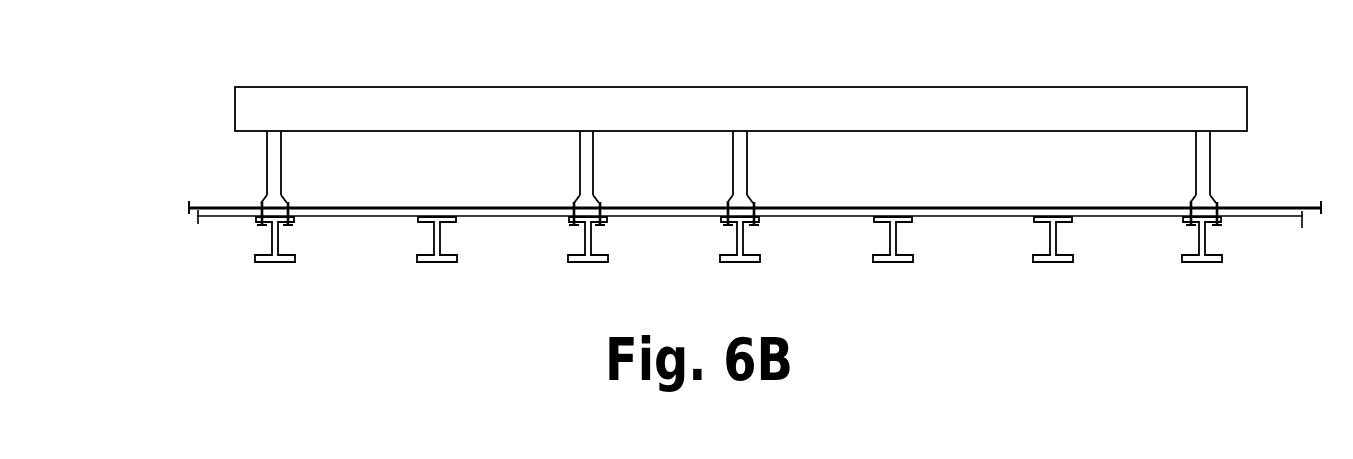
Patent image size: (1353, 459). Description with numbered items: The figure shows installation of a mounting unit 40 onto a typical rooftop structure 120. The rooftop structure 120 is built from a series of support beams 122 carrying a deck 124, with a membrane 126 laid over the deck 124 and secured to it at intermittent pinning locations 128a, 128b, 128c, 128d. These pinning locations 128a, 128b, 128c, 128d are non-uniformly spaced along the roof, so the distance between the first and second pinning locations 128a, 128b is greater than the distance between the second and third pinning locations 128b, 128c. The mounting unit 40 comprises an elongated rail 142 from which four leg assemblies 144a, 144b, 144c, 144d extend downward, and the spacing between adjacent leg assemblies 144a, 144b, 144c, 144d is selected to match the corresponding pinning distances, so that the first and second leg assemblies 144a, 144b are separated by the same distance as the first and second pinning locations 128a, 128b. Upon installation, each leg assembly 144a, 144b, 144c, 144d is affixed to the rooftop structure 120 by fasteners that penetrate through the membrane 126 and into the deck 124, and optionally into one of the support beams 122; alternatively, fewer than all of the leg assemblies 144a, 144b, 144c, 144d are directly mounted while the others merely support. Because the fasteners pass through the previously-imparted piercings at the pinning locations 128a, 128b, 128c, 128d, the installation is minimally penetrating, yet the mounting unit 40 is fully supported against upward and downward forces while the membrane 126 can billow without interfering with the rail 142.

The mounting unit 40 is at (676, 84).
The rail 142 is at (854, 114).
The membrane 126 is at (459, 205).
The rooftop structure 120 is at (186, 224).
The deck 124 is at (372, 219).
The support beams 122 is at (259, 263).
The first leg assembly 144a is at (285, 148).
The second leg assembly 144b is at (598, 151).
The third leg assembly 144c is at (751, 152).
The fourth leg assembly 144d is at (1191, 137).
The first pinning location 128a is at (267, 202).
The second pinning location 128b is at (578, 202).
The third pinning location 128c is at (731, 199).
The fourth pinning location 128d is at (1195, 200).